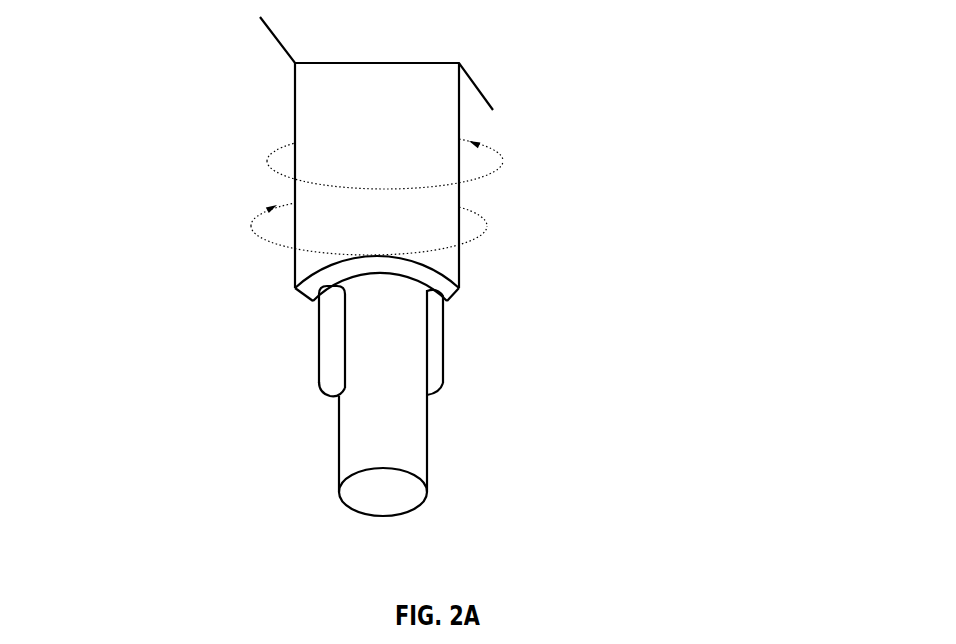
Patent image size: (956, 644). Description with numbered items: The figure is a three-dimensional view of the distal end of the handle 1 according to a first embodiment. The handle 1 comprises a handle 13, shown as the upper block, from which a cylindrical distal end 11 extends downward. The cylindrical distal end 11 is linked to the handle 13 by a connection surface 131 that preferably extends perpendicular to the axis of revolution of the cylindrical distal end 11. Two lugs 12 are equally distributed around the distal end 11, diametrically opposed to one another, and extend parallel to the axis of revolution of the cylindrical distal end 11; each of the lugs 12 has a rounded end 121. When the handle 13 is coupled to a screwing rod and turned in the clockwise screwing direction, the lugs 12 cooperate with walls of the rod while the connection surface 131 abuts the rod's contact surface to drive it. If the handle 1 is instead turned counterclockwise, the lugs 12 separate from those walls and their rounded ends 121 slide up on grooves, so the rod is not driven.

The handle 1 is at (579, 233).
The cylindrical distal end 11 is at (461, 458).
The lugs 12 is at (331, 363).
The rounded ends 121 is at (331, 402).
The handle 13 is at (285, 122).
The connection surface 131 is at (306, 297).